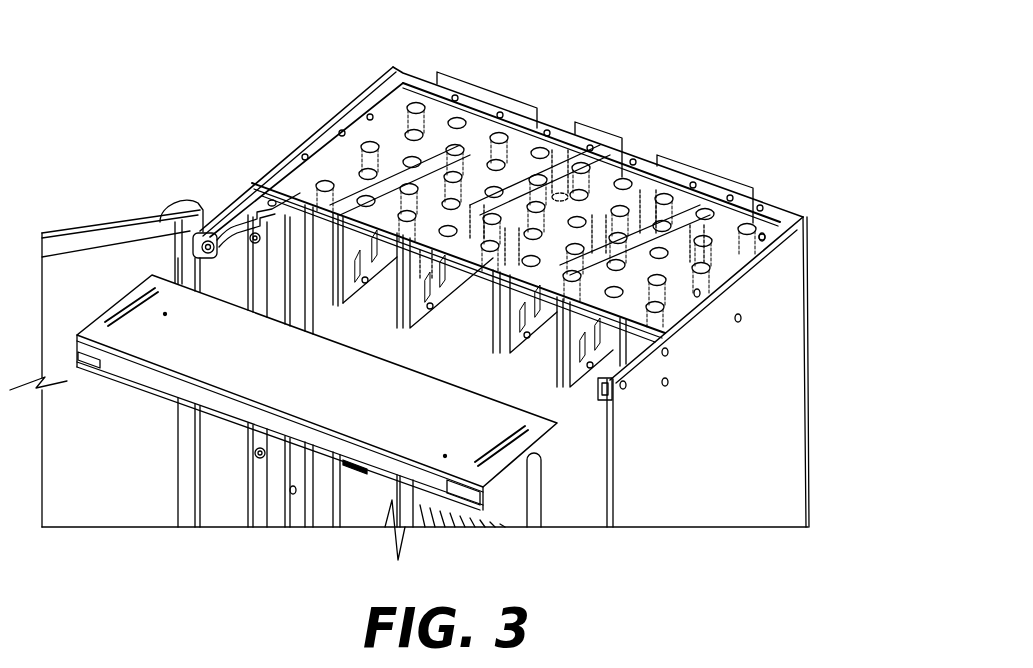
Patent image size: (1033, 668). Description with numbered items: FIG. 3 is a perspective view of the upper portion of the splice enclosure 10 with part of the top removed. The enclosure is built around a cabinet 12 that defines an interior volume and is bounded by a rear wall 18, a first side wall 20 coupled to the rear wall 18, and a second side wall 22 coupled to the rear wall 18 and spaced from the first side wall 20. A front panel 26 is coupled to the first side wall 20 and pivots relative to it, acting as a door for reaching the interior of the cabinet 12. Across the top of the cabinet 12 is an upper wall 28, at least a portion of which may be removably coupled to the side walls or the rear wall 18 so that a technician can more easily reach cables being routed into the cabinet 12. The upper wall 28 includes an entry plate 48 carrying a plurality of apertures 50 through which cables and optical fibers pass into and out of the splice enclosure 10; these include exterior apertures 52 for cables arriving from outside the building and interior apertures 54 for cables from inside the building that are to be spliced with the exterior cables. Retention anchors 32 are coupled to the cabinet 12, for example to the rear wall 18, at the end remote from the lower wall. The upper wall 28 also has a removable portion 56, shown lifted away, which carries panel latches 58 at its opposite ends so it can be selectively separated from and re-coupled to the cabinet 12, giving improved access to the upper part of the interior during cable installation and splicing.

The splice enclosure 10 is at (780, 100).
The cabinet 12 is at (788, 304).
The rear wall 18 is at (773, 200).
The first side wall 20 is at (214, 233).
The second side wall 22 is at (778, 395).
The front panel 26 is at (90, 222).
The upper wall 28 is at (160, 221).
The retention anchors 32 is at (352, 300).
The entry plate 48 is at (363, 130).
The apertures 50 is at (394, 125).
The exterior apertures 52 is at (487, 90).
The interior apertures 54 is at (600, 125).
The removable portion 56 is at (157, 330).
The panel latches 58 is at (83, 365).